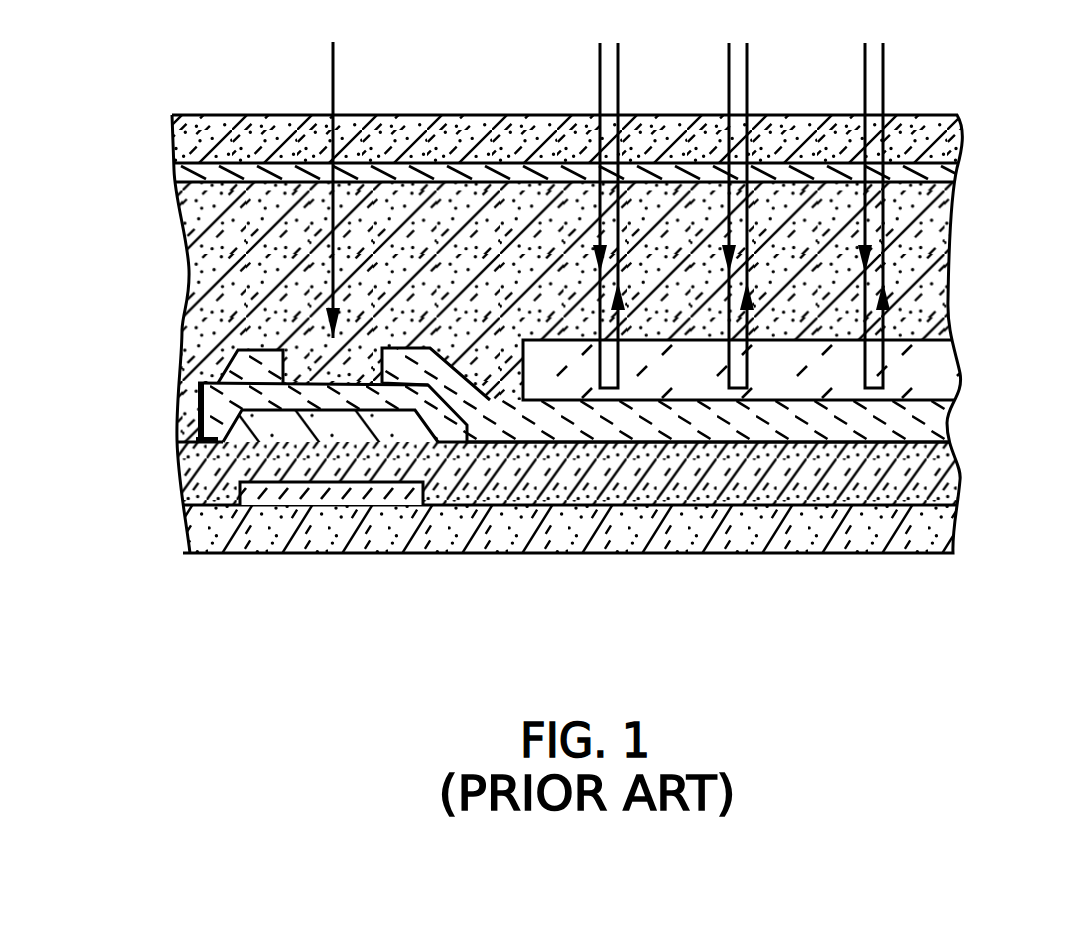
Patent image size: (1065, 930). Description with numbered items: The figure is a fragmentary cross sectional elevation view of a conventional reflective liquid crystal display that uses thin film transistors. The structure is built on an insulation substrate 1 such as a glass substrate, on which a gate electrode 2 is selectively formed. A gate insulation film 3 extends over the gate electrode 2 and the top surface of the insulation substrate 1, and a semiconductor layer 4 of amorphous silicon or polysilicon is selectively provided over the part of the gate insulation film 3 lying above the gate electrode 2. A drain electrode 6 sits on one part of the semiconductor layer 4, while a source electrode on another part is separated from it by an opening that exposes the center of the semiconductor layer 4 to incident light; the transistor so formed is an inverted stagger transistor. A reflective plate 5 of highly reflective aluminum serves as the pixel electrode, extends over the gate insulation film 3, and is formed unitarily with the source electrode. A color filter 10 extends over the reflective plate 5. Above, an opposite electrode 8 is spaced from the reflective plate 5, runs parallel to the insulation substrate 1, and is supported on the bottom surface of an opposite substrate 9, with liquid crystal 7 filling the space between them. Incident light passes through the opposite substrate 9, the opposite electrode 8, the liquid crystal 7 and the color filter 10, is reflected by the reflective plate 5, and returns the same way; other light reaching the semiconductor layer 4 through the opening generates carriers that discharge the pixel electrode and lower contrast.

The insulation substrate 1 is at (937, 530).
The gate electrode 2 is at (247, 502).
The gate insulation film 3 is at (957, 473).
The semiconductor layer 4 is at (198, 436).
The reflective plate 5 is at (943, 420).
The drain electrode 6 is at (198, 384).
The liquid crystal 7 is at (930, 230).
The opposite electrode 8 is at (957, 167).
The opposite substrate 9 is at (953, 115).
The color filter 10 is at (937, 375).